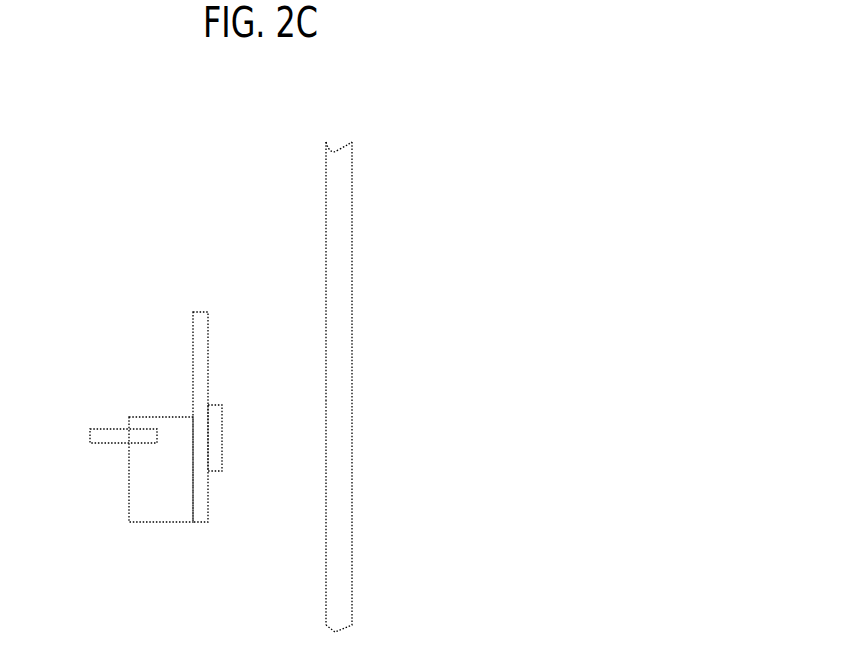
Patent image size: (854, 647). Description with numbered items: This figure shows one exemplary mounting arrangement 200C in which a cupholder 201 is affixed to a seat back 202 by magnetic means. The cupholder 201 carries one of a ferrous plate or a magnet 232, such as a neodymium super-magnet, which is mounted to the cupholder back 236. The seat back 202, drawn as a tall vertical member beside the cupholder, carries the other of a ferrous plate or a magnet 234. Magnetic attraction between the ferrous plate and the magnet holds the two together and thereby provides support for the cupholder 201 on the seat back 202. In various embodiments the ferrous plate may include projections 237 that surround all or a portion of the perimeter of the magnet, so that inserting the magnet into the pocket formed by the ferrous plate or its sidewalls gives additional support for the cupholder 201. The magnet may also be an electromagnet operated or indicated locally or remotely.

The seat or seat back 200C is at (455, 98).
The cupholder 201 is at (108, 478).
The seat back 202 is at (335, 307).
The ferrous plate or magnet 232 is at (225, 408).
The ferrous plate or magnet 234 is at (323, 473).
The cupholder back 236 is at (205, 521).
The projections 237 is at (316, 398).